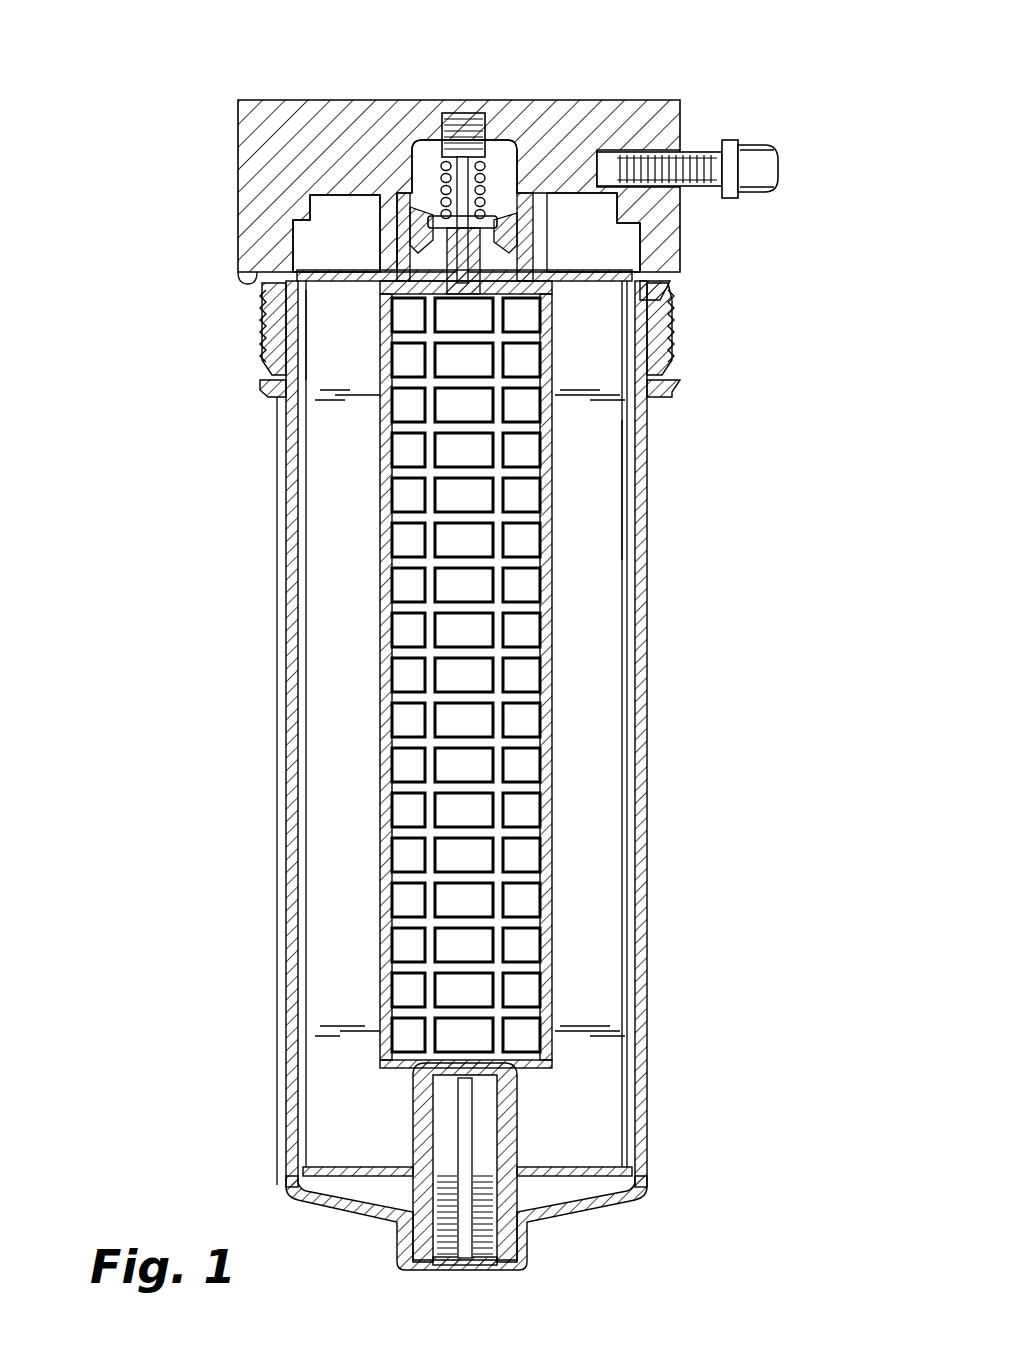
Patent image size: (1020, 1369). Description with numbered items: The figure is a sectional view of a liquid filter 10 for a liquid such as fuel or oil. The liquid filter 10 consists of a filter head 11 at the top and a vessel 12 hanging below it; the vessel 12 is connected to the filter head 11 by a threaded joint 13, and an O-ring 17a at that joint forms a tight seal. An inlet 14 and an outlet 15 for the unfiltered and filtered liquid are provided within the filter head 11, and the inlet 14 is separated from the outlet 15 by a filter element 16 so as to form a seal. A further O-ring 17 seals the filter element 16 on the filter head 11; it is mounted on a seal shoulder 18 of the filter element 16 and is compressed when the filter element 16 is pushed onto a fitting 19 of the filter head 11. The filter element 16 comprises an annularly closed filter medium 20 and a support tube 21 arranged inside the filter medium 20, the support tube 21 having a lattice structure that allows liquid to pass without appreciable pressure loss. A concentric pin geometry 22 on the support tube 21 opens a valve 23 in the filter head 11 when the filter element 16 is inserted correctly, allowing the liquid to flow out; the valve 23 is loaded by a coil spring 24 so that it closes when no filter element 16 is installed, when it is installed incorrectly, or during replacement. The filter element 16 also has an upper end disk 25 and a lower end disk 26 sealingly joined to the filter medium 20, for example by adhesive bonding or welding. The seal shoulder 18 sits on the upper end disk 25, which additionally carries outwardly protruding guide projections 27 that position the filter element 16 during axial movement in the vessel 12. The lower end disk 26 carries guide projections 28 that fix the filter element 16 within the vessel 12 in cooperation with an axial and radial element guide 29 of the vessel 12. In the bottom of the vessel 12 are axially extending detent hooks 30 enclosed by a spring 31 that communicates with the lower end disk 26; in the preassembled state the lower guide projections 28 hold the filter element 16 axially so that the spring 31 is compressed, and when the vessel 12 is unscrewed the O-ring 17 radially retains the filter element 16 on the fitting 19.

The liquid filter 10 is at (204, 200).
The filter head 11 is at (374, 126).
The vessel 12 is at (518, 770).
The threaded joint 13 is at (672, 306).
The inlet 14 is at (328, 216).
The outlet 15 is at (576, 165).
The filter element 16 is at (604, 494).
The O-ring 17 is at (548, 242).
The O-ring 17a is at (278, 353).
The seal shoulder 18 is at (476, 157).
The fitting 19 is at (547, 205).
The filter medium 20 is at (549, 674).
The support tube 21 is at (545, 729).
The pin geometry 22 is at (420, 226).
The valve 23 is at (492, 140).
The coil spring 24 is at (418, 142).
The upper end disk 25 is at (336, 284).
The lower end disk 26 is at (345, 1180).
The guide projections 27 is at (650, 290).
The guide projections 28 is at (633, 1170).
The element guide 29 is at (523, 1184).
The detent hooks 30 is at (513, 1167).
The spring 31 is at (564, 1206).